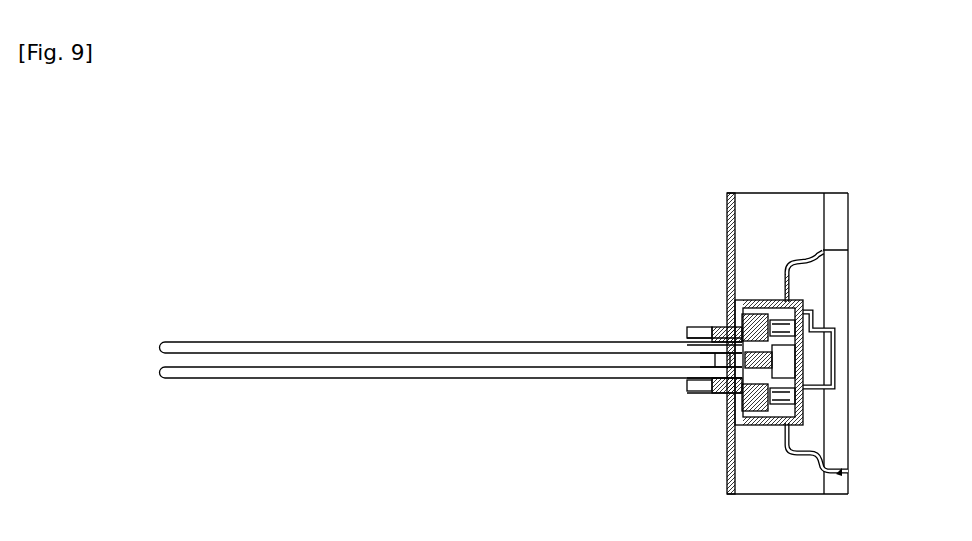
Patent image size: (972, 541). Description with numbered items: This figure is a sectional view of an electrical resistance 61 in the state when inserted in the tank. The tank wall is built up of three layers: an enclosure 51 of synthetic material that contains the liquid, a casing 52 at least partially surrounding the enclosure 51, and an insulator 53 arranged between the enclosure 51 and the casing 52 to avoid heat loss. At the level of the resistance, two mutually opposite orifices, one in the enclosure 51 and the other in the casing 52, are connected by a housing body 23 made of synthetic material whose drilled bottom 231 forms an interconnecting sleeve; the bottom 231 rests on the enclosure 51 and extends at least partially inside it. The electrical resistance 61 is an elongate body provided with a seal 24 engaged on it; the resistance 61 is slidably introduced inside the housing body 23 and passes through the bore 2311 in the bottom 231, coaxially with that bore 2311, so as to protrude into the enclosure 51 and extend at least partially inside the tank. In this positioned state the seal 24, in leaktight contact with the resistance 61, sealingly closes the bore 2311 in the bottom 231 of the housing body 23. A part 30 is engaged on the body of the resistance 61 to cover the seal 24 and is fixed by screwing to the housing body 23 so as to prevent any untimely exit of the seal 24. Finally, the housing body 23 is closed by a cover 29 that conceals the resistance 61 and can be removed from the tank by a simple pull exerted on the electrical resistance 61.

The electrical resistance 61 is at (390, 352).
The enclosure 51 is at (730, 197).
The casing 52 is at (845, 243).
The insulator 53 is at (790, 218).
The cover 29 is at (837, 332).
The part 30 is at (783, 383).
The housing body 23 is at (732, 447).
The bottom 231 is at (710, 325).
The bore 2311 is at (710, 380).
The seal 24 is at (738, 358).